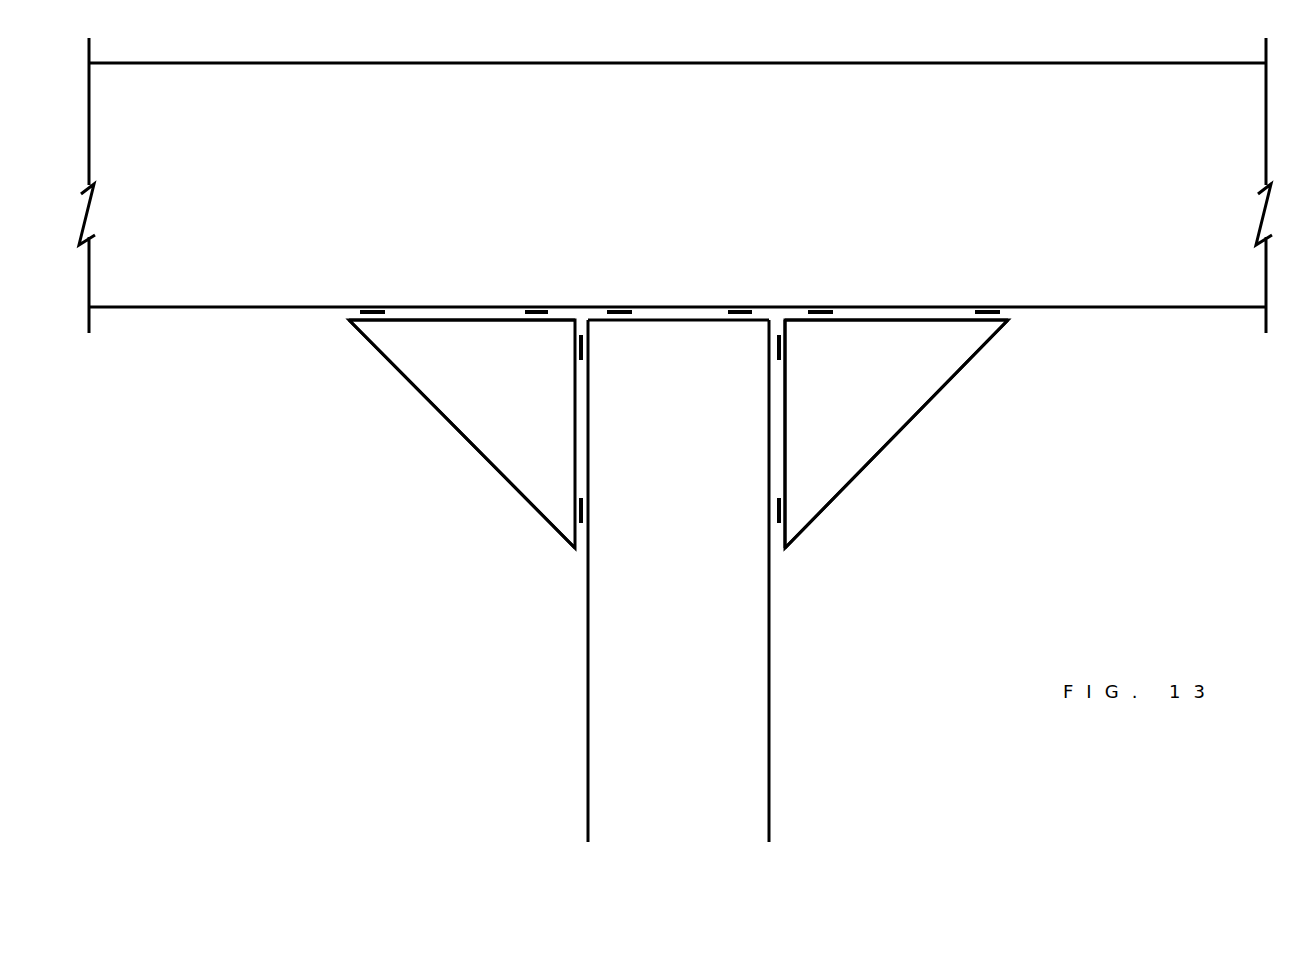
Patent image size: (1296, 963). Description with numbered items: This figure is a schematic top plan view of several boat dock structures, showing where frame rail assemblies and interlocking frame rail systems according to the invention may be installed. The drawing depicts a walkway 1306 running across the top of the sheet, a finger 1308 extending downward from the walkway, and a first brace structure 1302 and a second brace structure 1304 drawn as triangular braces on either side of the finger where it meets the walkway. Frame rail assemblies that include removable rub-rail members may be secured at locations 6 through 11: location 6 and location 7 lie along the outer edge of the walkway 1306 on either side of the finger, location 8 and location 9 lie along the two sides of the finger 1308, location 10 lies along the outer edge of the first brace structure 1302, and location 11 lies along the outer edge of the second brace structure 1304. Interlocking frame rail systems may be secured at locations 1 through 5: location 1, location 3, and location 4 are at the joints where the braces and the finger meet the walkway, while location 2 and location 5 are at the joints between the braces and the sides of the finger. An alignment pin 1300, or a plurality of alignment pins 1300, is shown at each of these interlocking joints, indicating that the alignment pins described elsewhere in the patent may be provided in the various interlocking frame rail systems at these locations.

The location 1 is at (900, 318).
The location 2 is at (780, 407).
The location 3 is at (687, 318).
The location 4 is at (478, 312).
The location 5 is at (590, 418).
The location 6 is at (217, 307).
The location 7 is at (1113, 307).
The location 8 is at (770, 723).
The location 9 is at (588, 720).
The location 10 is at (935, 398).
The location 11 is at (442, 420).
The alignment pin 1300 is at (372, 312).
The first brace structure 1302 is at (868, 405).
The second brace structure 1304 is at (507, 430).
The walkway 1306 is at (1188, 272).
The finger 1308 is at (750, 808).